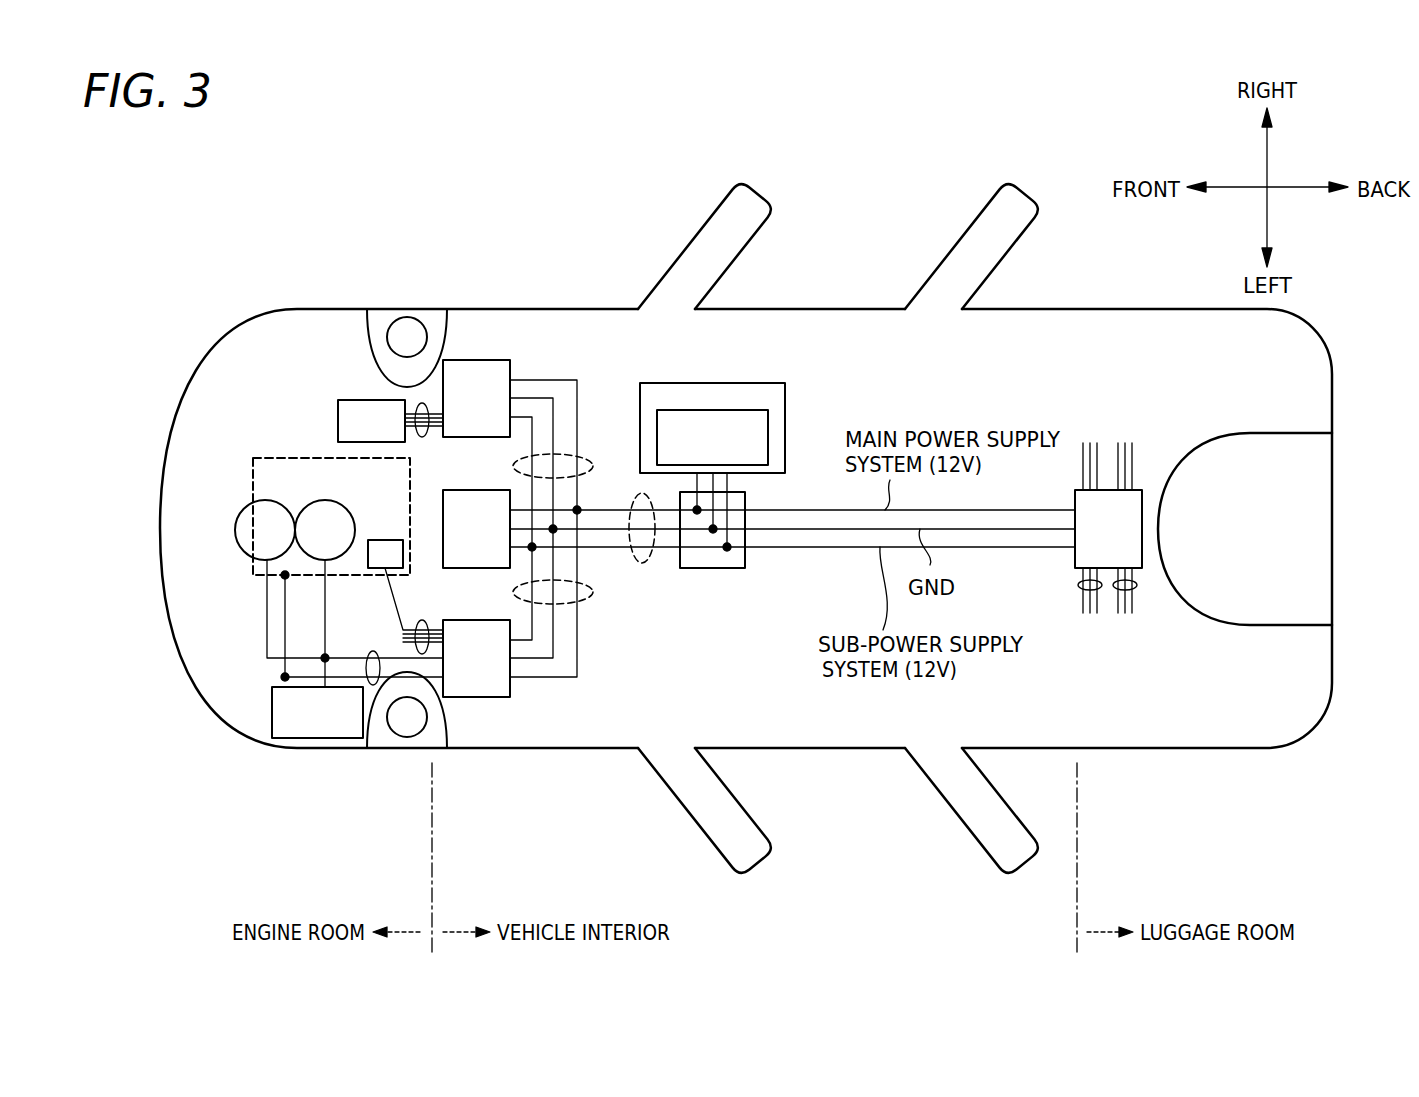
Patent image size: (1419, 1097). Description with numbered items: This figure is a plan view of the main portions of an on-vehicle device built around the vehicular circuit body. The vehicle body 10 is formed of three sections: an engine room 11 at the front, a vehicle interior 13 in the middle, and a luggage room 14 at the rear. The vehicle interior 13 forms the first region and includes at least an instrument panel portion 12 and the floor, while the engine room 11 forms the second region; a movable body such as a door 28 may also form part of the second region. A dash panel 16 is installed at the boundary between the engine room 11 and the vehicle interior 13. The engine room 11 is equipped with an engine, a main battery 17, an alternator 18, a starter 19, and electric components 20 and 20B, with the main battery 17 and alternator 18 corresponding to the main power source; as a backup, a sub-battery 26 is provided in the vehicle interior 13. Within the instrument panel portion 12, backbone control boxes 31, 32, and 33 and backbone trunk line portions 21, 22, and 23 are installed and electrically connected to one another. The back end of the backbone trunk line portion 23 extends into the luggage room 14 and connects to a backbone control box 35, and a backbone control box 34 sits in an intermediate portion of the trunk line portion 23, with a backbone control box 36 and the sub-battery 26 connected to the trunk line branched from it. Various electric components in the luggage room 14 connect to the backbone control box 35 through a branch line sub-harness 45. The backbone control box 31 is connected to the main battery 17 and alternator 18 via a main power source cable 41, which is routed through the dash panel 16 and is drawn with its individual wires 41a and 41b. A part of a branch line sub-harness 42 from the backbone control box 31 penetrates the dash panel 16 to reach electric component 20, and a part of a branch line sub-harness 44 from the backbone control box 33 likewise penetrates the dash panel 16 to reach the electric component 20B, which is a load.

The vehicle body 10 is at (1346, 360).
The engine room 11 is at (205, 423).
The instrument panel portion 12 is at (500, 300).
The vehicle interior 13 is at (1040, 345).
The luggage room 14 is at (1270, 683).
The dash panel 16 is at (460, 332).
The main battery 17 is at (272, 712).
The alternator 18 is at (237, 503).
The starter 19 is at (296, 515).
The electric component 20 is at (383, 538).
The electric component 20B is at (338, 420).
The backbone trunk line portion 21 is at (585, 600).
The backbone trunk line portion 22 is at (585, 458).
The backbone trunk line portion 23 is at (648, 563).
The sub-battery 26 is at (743, 404).
The door 28 is at (687, 240).
The backbone control box 31 is at (480, 697).
The backbone control box 32 is at (485, 568).
The backbone control box 33 is at (485, 437).
The backbone control box 34 is at (712, 568).
The backbone control box 35 is at (1142, 555).
The backbone control box 36 is at (768, 437).
The main power source cable 41 is at (325, 688).
The power supply wire 41a is at (350, 655).
The ground wire 41b is at (352, 680).
The branch line sub-harness 42 is at (410, 625).
The branch line sub-harness 44 is at (420, 403).
The branch line sub-harness 45 is at (1118, 592).